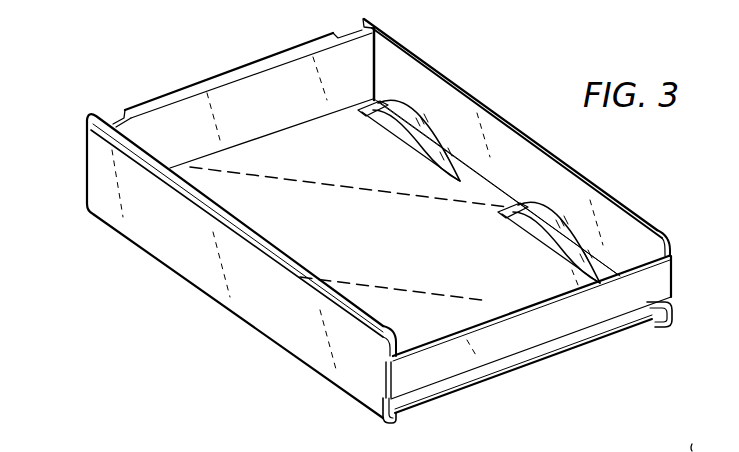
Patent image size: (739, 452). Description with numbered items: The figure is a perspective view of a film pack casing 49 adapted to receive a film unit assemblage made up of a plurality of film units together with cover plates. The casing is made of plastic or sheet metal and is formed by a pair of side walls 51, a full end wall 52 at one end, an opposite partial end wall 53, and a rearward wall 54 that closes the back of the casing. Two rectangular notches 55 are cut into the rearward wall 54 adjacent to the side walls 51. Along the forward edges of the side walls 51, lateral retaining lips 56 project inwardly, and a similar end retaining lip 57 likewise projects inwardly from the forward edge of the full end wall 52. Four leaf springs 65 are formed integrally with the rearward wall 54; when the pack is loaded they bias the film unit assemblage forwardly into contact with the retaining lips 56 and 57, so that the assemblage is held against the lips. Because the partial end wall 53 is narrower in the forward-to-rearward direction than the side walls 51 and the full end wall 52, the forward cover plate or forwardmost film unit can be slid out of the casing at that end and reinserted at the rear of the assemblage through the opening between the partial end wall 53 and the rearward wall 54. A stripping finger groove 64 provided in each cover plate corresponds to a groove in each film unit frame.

The film pack casing 49 is at (92, 191).
The side walls 51 is at (506, 168).
The full end wall 52 is at (265, 99).
The partial end wall 53 is at (510, 341).
The rearward wall 54 is at (386, 238).
The rectangular notches 55 is at (396, 420).
The lateral retaining lips 56 is at (262, 246).
The end retaining lip 57 is at (221, 79).
The stripping finger groove 64 is at (689, 435).
The leaf springs 65 is at (411, 123).